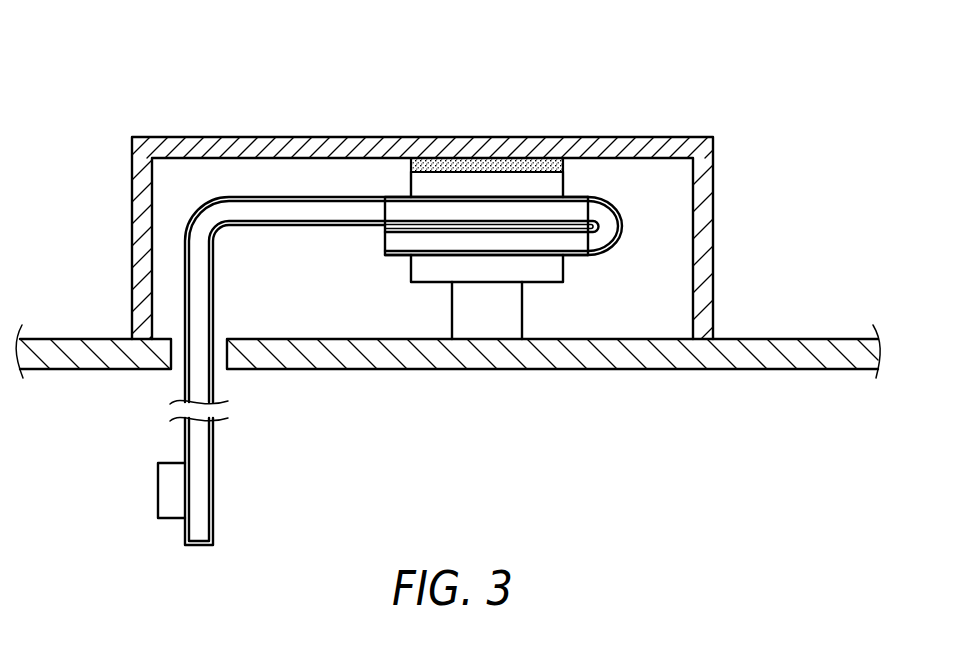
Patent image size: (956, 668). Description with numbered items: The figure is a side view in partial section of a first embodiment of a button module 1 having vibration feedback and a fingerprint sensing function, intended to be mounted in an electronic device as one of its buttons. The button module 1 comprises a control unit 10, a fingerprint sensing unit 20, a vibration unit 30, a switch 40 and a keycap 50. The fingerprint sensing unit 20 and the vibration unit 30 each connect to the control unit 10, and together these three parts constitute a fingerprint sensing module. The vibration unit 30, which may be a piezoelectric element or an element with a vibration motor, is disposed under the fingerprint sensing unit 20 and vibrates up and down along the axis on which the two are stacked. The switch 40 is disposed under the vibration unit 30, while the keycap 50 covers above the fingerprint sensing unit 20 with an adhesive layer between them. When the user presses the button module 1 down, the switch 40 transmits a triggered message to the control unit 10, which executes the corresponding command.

The button module 1 is at (138, 93).
The control unit 10 is at (167, 493).
The fingerprint sensing unit 20 is at (528, 182).
The vibration unit 30 is at (552, 265).
The switch 40 is at (493, 317).
The keycap 50 is at (293, 147).